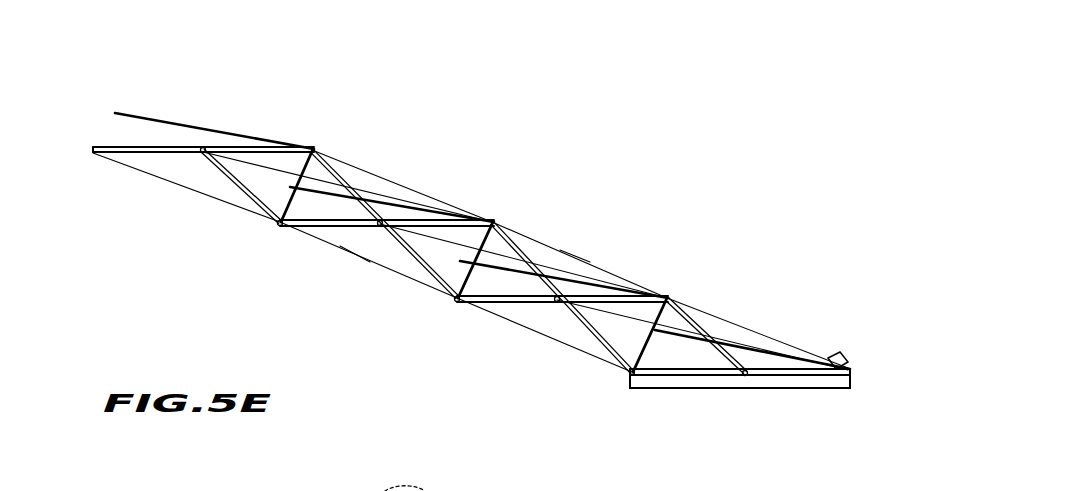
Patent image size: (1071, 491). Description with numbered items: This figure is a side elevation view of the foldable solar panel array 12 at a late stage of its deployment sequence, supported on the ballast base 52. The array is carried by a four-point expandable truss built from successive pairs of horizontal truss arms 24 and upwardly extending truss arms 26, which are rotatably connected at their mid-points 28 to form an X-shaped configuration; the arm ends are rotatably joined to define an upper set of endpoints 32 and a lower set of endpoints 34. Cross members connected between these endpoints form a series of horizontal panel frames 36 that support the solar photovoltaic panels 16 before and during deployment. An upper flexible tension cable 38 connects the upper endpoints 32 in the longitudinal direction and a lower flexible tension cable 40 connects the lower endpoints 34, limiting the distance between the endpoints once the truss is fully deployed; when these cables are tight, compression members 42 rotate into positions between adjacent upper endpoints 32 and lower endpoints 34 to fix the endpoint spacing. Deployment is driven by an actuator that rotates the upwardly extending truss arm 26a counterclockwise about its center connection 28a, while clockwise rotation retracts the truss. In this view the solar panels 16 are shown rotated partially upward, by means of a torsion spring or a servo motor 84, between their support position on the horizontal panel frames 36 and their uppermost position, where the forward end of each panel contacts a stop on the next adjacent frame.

The foldable solar panel array 12 is at (474, 136).
The solar photovoltaic panel 16 is at (182, 124).
The horizontal truss arm 24 is at (134, 150).
The upwardly extending truss arm 26 is at (228, 178).
The upwardly extending truss arm 26a is at (700, 330).
The mid-point 28 is at (202, 153).
The center connection 28a is at (744, 380).
The upper endpoint 32 is at (313, 149).
The lower endpoint 34 is at (280, 224).
The horizontal panel frame 36 is at (98, 140).
The upper flexible tension cable 38 is at (578, 263).
The lower flexible tension cable 40 is at (355, 260).
The compression member 42 is at (296, 183).
The ballast base 52 is at (766, 388).
The servo motor 84 is at (849, 360).